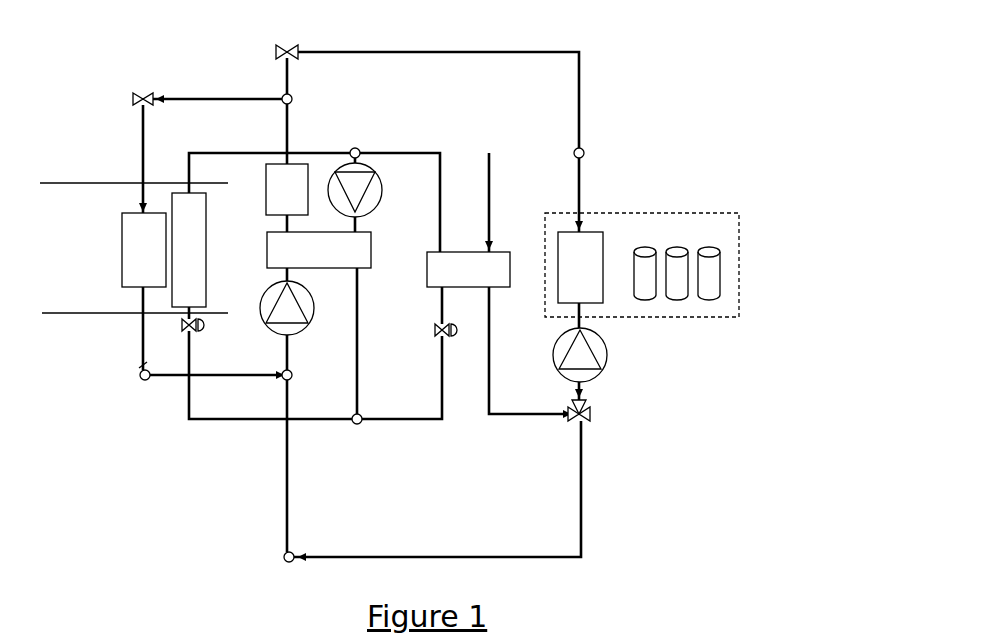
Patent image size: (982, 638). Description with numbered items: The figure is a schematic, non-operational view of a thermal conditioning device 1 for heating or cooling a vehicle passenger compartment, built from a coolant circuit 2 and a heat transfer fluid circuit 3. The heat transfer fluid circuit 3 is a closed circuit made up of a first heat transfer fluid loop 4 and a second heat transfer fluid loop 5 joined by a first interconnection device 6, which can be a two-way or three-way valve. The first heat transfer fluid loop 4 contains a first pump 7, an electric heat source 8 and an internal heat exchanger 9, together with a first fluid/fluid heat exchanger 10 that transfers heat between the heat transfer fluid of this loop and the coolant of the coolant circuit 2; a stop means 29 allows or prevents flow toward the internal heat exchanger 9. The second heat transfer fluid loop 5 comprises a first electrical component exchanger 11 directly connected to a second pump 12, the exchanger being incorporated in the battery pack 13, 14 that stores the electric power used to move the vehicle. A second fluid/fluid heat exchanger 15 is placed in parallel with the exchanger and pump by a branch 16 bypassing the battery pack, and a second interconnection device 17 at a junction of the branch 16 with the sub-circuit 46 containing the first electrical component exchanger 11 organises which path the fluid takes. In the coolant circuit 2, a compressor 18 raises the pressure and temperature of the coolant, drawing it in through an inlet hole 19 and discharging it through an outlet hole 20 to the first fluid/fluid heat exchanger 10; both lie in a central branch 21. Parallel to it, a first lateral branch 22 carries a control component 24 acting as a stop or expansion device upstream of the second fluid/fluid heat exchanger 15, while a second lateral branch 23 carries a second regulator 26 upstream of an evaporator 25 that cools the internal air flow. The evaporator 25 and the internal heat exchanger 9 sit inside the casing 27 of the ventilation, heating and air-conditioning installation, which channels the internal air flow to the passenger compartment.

The thermal conditioning device 1 is at (728, 76).
The coolant circuit 2 is at (381, 430).
The heat transfer fluid circuit 3 is at (241, 70).
The first heat transfer fluid loop 4 is at (152, 384).
The second heat transfer fluid loop 5 is at (556, 40).
The first interconnection device 6 is at (283, 46).
The first pump 7 is at (306, 327).
The electric heat source 8 is at (287, 189).
The internal heat exchanger 9 is at (144, 250).
The first fluid/fluid heat exchanger 10 is at (319, 250).
The first electrical component exchanger 11 is at (580, 267).
The second pump 12 is at (608, 350).
The battery pack 13 is at (724, 309).
The battery pack 14 is at (741, 220).
The second fluid/fluid heat exchanger 15 is at (468, 269).
The branch 16 is at (510, 152).
The second interconnection device 17 is at (592, 414).
The compressor 18 is at (392, 192).
The inlet hole 19 is at (362, 158).
The outlet hole 20 is at (360, 218).
The central branch 21 is at (361, 372).
The first lateral branch 22 is at (474, 457).
The second lateral branch 23 is at (187, 407).
The control component 24 is at (458, 335).
The evaporator 25 is at (189, 250).
The second regulator 26 is at (203, 332).
The casing 27 is at (62, 318).
The stop means 29 is at (140, 92).
The sub-circuit 46 is at (508, 400).